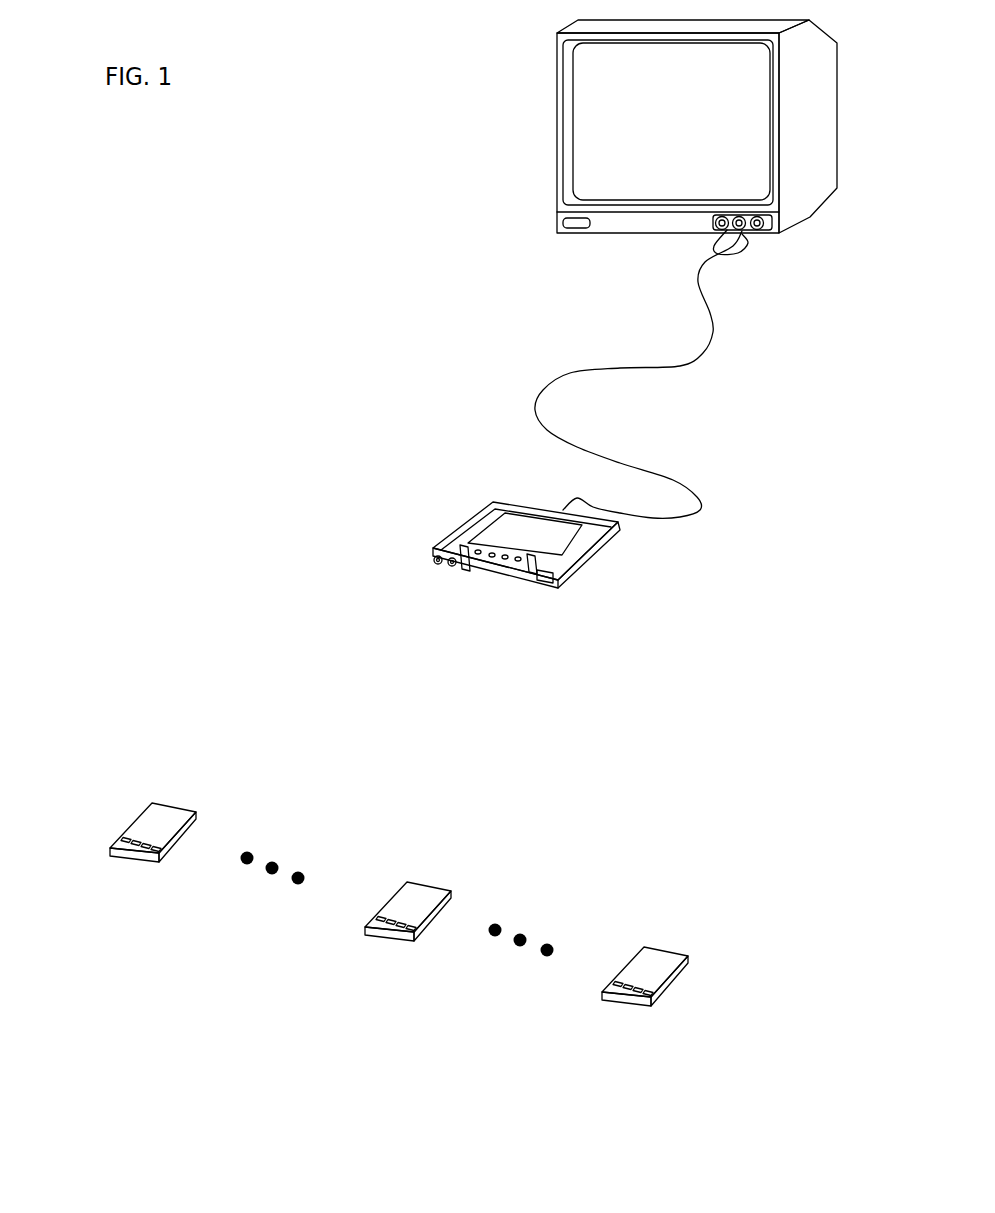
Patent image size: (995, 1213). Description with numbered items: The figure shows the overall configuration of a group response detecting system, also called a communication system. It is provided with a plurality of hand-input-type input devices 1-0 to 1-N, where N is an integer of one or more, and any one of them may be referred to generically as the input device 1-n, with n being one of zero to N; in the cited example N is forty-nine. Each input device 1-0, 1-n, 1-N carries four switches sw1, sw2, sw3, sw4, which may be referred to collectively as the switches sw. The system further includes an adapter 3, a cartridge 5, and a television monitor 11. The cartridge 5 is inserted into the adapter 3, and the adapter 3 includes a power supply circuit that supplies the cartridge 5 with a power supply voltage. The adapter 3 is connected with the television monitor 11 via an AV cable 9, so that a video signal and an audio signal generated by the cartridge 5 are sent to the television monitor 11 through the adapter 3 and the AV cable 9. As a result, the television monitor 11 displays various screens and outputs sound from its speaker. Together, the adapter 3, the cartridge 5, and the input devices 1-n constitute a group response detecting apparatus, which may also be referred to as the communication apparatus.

The television monitor 11 is at (608, 113).
The AV cable 9 is at (703, 512).
The adapter 3 is at (555, 521).
The cartridge 5 is at (505, 532).
The input device 1-0 is at (143, 815).
The input device 1-n is at (405, 883).
The input device 1-N is at (635, 952).
The switch sw1 is at (125, 840).
The switch sw2 is at (134, 846).
The switch sw3 is at (145, 849).
The switch sw4 is at (155, 853).